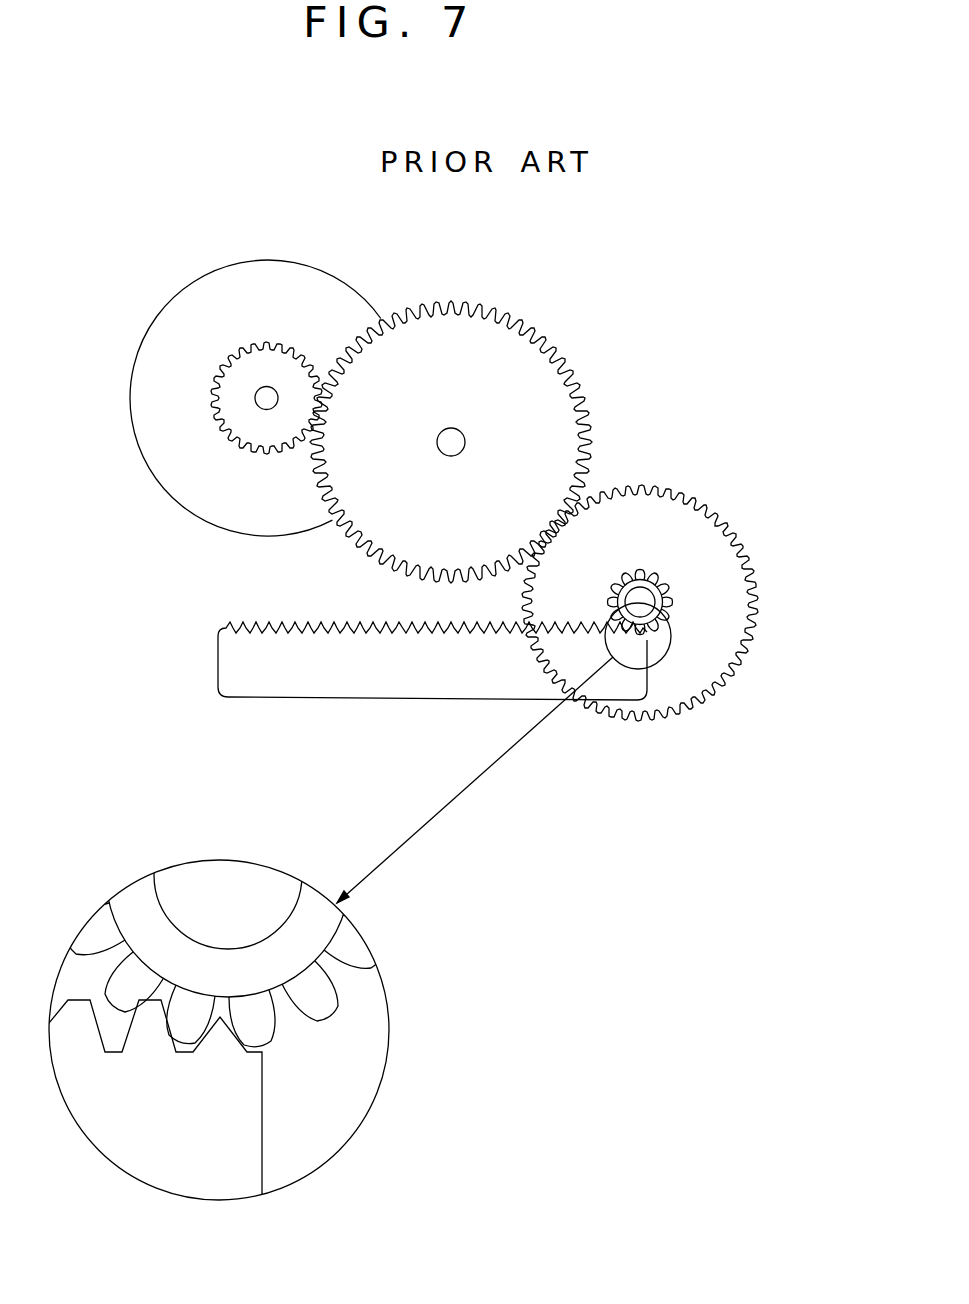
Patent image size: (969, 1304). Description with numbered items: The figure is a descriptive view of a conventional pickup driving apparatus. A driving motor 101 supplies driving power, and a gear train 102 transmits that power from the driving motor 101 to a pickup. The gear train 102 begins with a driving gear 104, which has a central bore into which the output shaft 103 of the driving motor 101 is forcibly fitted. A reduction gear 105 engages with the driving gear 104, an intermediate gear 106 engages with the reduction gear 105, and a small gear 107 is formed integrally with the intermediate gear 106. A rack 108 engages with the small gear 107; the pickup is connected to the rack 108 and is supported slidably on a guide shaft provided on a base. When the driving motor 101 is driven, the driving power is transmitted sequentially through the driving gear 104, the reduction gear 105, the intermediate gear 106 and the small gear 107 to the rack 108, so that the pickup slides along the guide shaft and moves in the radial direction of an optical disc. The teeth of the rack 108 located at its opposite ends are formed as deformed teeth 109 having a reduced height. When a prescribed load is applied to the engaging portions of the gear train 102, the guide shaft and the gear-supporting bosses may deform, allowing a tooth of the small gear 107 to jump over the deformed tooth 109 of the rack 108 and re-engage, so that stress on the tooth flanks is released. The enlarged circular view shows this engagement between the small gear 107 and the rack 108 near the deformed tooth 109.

The driving motor 101 is at (274, 273).
The gear train 102 is at (488, 415).
The output shaft 103 is at (267, 399).
The driving gear 104 is at (242, 418).
The reduction gear 105 is at (572, 437).
The intermediate gear 106 is at (683, 520).
The small gear 107 is at (667, 588).
The rack 108 is at (323, 648).
The deformed tooth 109 is at (233, 1048).